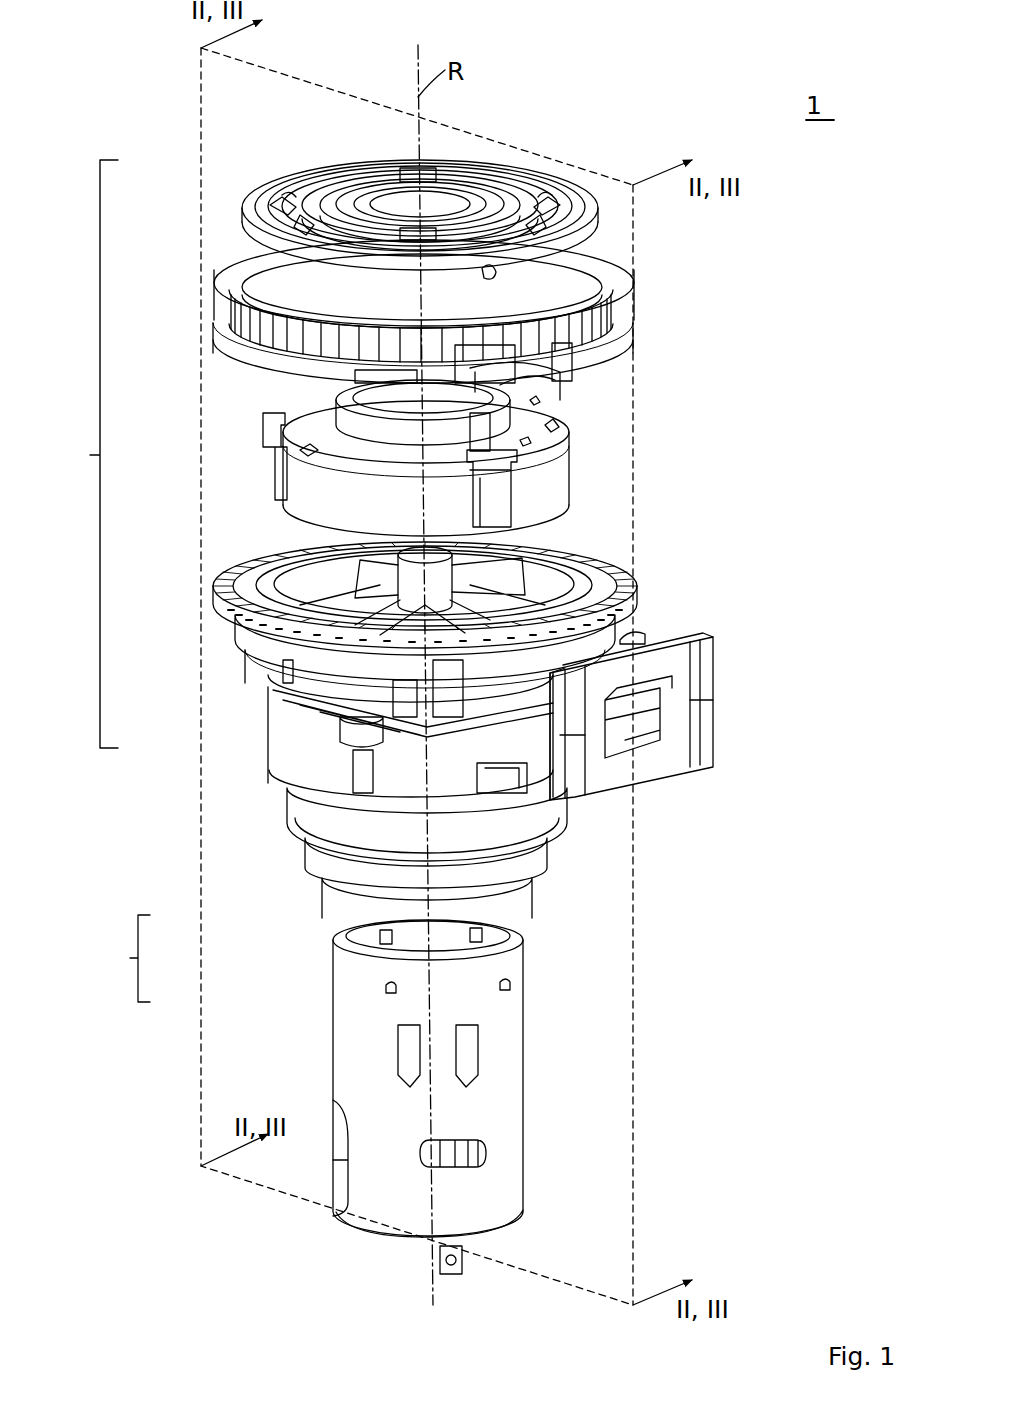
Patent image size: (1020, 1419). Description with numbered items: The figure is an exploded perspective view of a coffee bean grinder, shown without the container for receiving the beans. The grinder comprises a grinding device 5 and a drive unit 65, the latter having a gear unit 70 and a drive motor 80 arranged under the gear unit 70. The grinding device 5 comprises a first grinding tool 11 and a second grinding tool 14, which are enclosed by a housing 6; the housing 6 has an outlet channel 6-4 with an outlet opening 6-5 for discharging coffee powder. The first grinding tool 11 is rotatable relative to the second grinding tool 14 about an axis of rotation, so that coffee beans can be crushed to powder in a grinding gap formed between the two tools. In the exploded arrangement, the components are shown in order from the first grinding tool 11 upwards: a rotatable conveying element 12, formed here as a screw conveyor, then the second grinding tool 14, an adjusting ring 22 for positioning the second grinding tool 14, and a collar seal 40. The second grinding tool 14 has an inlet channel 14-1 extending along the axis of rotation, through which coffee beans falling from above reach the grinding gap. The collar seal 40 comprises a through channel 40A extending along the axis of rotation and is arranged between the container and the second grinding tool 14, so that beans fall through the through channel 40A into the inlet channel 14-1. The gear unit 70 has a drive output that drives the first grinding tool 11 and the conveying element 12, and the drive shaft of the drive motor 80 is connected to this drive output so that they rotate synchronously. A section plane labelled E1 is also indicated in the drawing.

The grinding device 5 is at (393, 699).
The housing 6 is at (264, 737).
The outlet channel 6-4 is at (650, 732).
The outlet opening 6-5 is at (640, 755).
The first grinding tool 11 is at (393, 627).
The conveying element 12 is at (367, 578).
The second grinding tool 14 is at (254, 417).
The inlet channel 14-1 is at (505, 383).
The adjusting ring 22 is at (255, 322).
The collar seal 40 is at (358, 197).
The through channel 40A is at (418, 205).
The drive unit 65 is at (315, 1056).
The gear unit 70 is at (295, 845).
The drive motor 80 is at (328, 990).
The plane E1 is at (633, 1140).